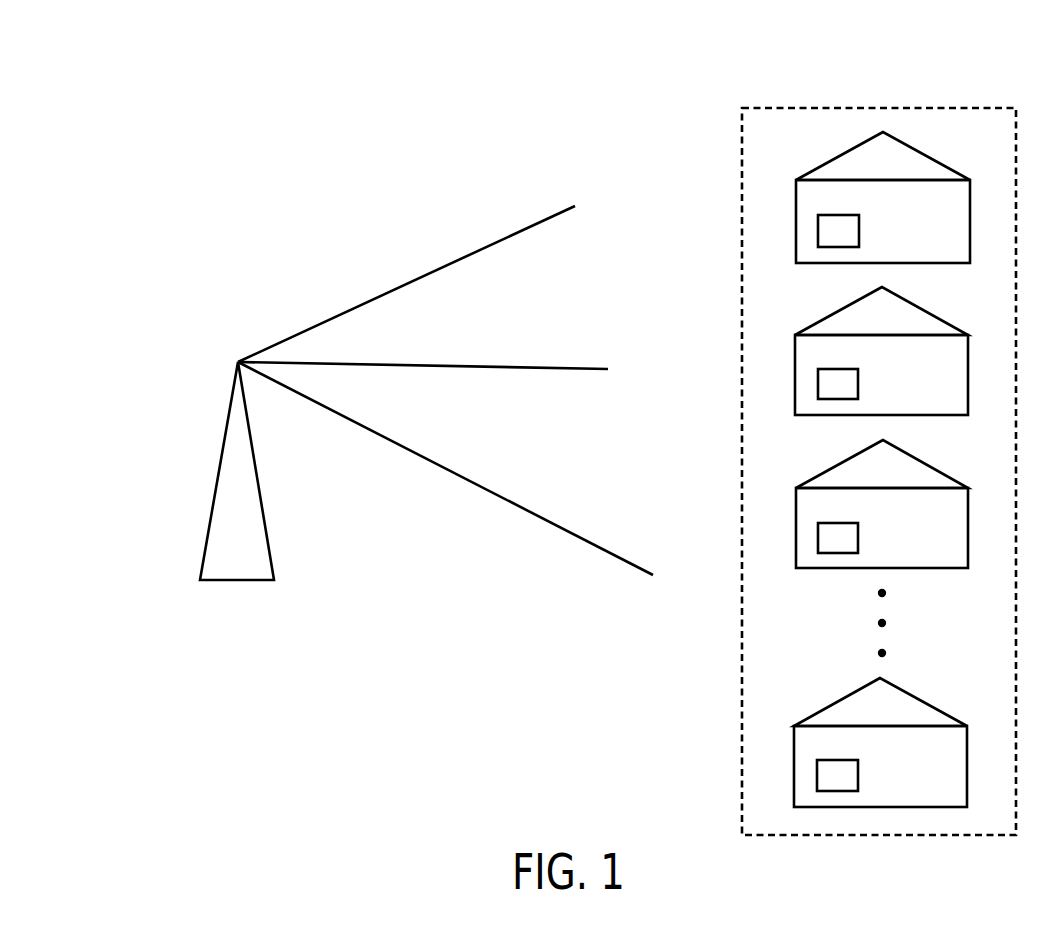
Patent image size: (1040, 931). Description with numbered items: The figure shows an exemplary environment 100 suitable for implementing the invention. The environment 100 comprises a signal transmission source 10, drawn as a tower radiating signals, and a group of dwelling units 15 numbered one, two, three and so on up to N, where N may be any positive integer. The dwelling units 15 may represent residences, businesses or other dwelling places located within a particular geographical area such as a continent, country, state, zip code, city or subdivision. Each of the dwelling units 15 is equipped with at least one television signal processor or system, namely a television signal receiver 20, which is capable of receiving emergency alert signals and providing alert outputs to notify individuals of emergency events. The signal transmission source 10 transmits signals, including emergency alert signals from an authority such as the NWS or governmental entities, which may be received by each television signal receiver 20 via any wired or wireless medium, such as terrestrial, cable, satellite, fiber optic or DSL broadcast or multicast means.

The environment 100 is at (588, 40).
The signal transmission source 10 is at (227, 430).
The dwelling units 15 is at (945, 108).
The television signal receiver 20 is at (859, 231).